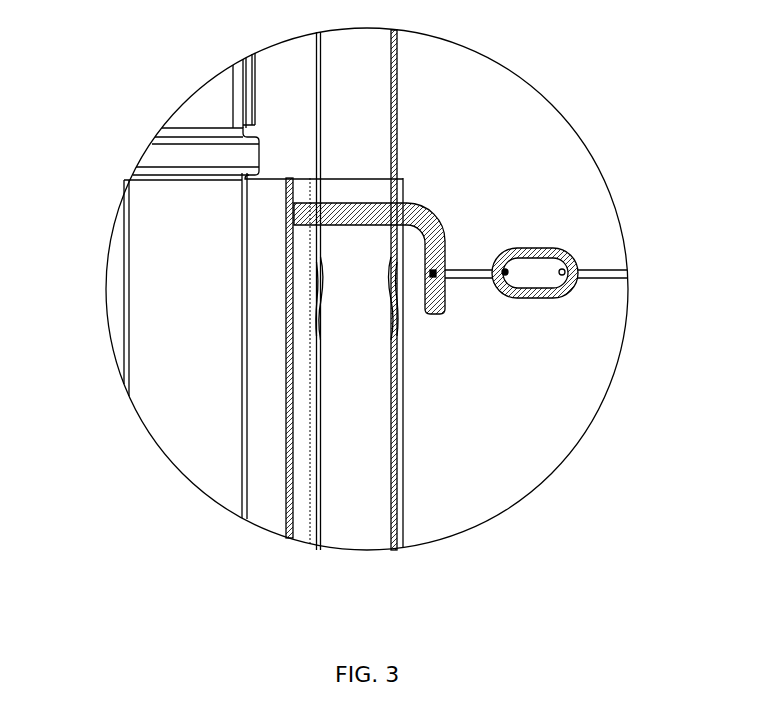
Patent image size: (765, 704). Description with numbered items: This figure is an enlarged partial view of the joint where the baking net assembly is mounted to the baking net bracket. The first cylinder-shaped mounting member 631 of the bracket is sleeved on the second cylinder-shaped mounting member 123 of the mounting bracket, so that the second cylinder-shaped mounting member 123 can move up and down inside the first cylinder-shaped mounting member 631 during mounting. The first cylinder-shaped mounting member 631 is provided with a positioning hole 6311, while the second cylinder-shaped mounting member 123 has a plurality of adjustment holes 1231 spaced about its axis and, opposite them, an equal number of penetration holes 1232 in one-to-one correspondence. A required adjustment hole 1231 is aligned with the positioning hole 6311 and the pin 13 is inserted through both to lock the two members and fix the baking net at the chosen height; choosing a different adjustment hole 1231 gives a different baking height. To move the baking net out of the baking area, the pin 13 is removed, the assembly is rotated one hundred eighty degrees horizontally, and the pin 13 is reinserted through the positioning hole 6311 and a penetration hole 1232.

The pin 13 is at (447, 253).
The second cylinder-shaped mounting member 123 is at (343, 500).
The adjustment hole 1231 is at (390, 330).
The penetration hole 1232 is at (320, 332).
The first cylinder-shaped mounting member 631 is at (410, 430).
The positioning hole 6311 is at (400, 200).